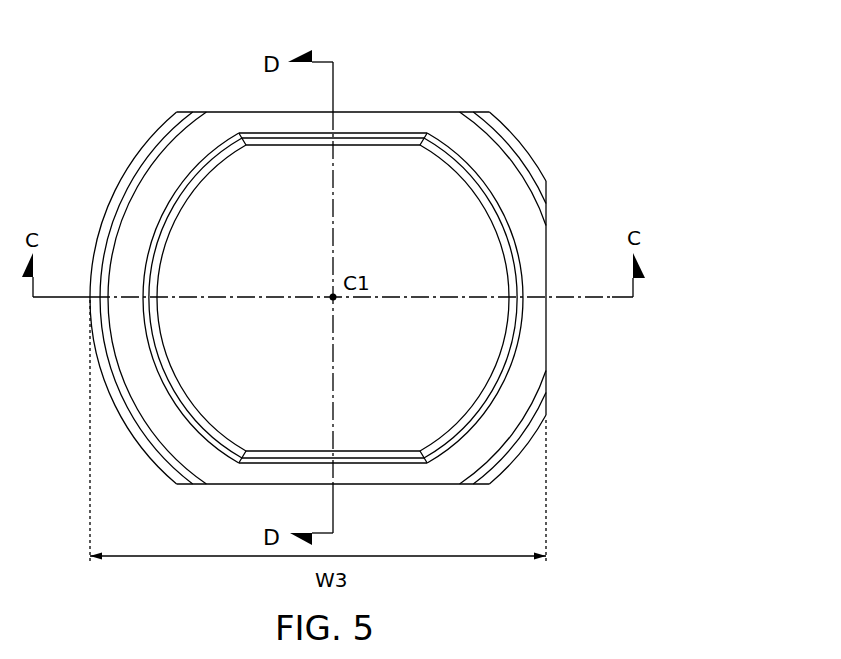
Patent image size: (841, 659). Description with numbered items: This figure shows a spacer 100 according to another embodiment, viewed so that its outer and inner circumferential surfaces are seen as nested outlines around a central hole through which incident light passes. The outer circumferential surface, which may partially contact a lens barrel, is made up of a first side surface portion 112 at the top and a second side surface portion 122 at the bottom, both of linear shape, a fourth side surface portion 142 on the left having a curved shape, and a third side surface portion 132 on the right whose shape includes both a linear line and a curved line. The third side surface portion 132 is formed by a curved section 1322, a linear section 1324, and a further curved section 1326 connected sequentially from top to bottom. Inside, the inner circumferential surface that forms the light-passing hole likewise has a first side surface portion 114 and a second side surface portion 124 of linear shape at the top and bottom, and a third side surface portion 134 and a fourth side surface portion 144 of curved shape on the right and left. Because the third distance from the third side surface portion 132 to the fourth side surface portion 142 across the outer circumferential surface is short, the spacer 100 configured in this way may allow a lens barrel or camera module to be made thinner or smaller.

The spacer 100 is at (481, 96).
The first side surface portion 112 is at (419, 112).
The second side surface portion 122 is at (418, 484).
The fourth side surface portion 142 is at (118, 185).
The third side surface portion 132 is at (673, 122).
The curved section 1322 is at (523, 141).
The linear section 1324 is at (546, 340).
The curved section 1326 is at (524, 455).
The first side surface portion 114 is at (284, 146).
The second side surface portion 124 is at (286, 450).
The fourth side surface portion 144 is at (181, 212).
The third side surface portion 134 is at (488, 385).